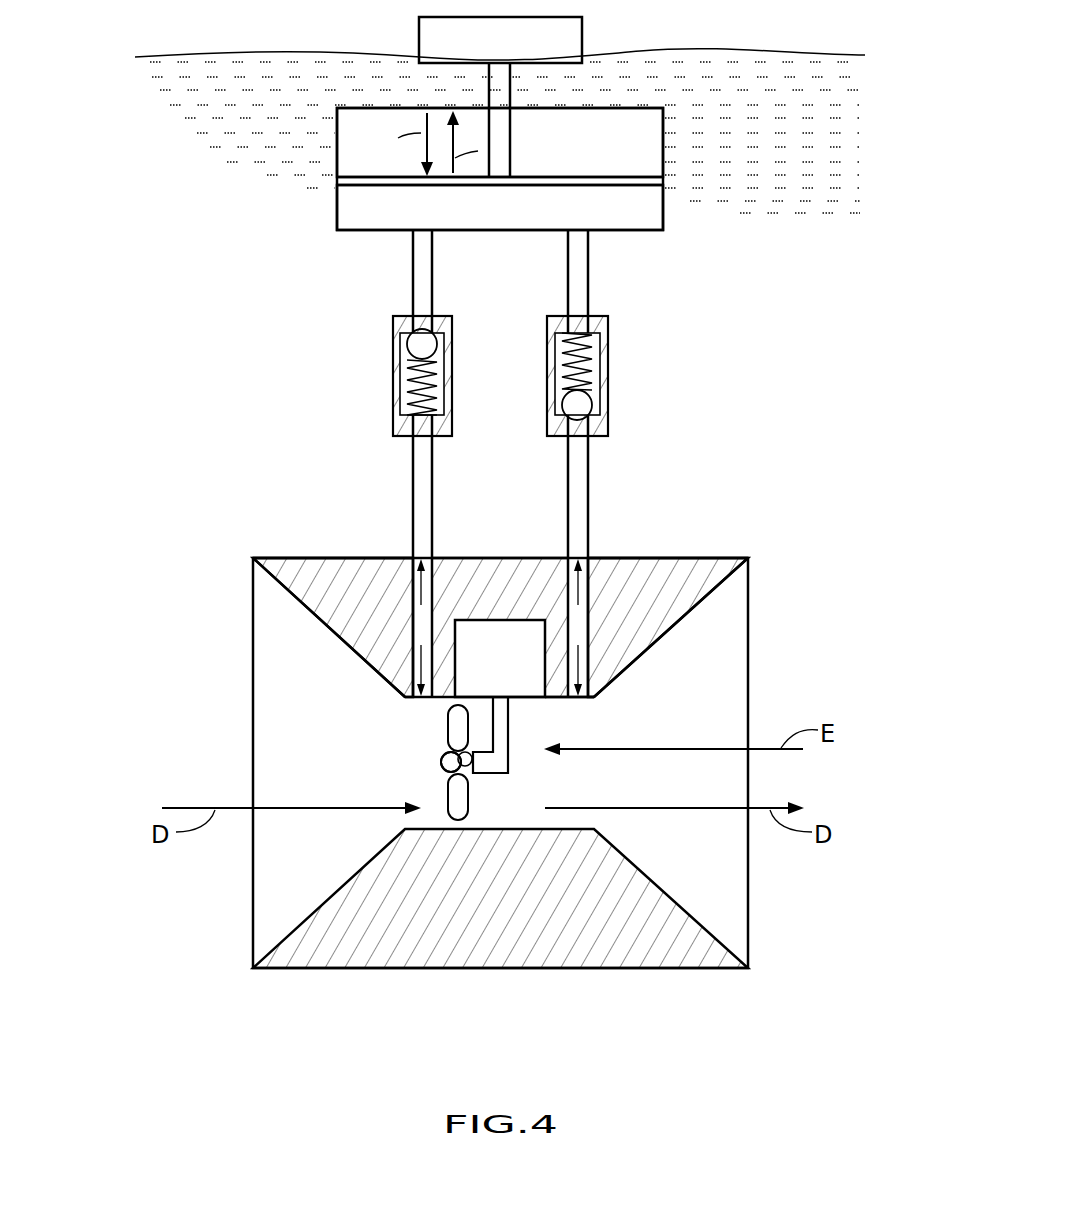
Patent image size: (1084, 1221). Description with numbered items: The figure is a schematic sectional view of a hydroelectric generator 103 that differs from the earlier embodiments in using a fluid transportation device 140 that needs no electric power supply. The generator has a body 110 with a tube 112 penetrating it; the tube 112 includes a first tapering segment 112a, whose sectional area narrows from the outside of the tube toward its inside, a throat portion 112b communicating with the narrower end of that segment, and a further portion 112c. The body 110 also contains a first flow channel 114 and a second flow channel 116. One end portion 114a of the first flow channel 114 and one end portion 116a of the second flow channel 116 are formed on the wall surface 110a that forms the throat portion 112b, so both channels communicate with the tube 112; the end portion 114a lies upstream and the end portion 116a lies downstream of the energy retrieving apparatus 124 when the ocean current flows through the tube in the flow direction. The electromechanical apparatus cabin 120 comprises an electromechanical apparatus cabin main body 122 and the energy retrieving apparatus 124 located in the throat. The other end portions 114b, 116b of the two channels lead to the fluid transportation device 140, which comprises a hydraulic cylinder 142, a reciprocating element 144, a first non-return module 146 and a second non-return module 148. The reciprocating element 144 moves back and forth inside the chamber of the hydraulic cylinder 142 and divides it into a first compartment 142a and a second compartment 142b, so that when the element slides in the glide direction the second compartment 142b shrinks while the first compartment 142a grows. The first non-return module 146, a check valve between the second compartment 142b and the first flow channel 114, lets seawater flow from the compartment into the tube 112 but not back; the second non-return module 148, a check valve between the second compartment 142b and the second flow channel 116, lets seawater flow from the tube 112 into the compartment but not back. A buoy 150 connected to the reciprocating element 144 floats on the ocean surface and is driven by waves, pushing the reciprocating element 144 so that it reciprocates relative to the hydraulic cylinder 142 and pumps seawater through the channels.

The hydroelectric generator 103 is at (850, 390).
The body 110 is at (499, 741).
The wall surface 110a is at (566, 710).
The tube 112 is at (369, 727).
The first tapering segment 112a is at (312, 668).
The throat portion 112b is at (443, 758).
The lower flow passage portion 112c is at (640, 775).
The first flow channel 114 is at (300, 605).
The end portion of the first flow channel 114a is at (425, 643).
The other end portion of the first flow channel 114b is at (407, 592).
The second flow channel 116 is at (710, 605).
The end portion of the second flow channel 116a is at (595, 635).
The other end portion of the second flow channel 116b is at (607, 600).
The electromechanical apparatus cabin 120 is at (500, 605).
The electromechanical apparatus cabin main body 122 is at (512, 640).
The energy retrieving apparatus 124 is at (460, 826).
The fluid transportation device 140 is at (499, 149).
The hydraulic cylinder 142 is at (557, 196).
The first compartment 142a is at (640, 155).
The second compartment 142b is at (620, 213).
The reciprocating element 144 is at (382, 184).
The first non-return module 146 is at (393, 376).
The second non-return module 148 is at (608, 376).
The buoy 150 is at (565, 33).